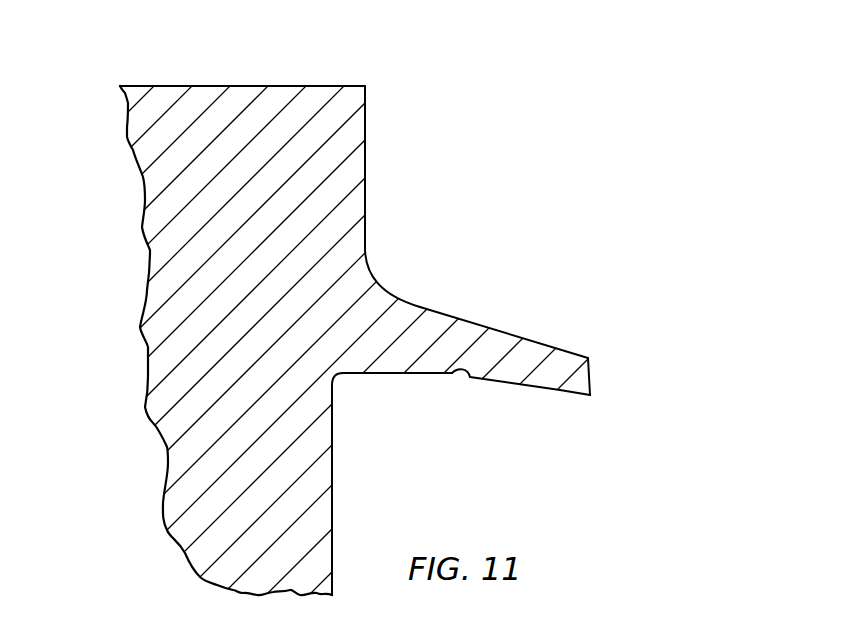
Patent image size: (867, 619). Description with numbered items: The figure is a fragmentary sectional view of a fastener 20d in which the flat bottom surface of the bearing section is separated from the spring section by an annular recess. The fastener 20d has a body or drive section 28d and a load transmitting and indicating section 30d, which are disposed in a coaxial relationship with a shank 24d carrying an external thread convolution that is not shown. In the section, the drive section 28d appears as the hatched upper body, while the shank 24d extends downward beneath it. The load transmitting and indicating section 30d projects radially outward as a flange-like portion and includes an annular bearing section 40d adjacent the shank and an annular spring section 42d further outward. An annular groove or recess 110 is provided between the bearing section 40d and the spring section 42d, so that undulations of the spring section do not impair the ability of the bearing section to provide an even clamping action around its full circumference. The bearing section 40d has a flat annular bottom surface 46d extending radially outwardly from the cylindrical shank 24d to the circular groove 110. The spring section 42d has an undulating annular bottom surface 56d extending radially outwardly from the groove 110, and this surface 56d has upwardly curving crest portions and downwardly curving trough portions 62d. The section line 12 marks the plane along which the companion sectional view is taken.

The section line 12- 12 is at (80, 475).
The fastener 20d is at (494, 182).
The shank 24d is at (314, 524).
The body or drive section 28d is at (337, 83).
The load transmitting and indicating section 30d is at (507, 304).
The annular bearing section 40d is at (429, 306).
The annular spring section 42d is at (647, 303).
The flat annular bottom surface 46d is at (394, 376).
The undulating annular bottom surface 56d is at (541, 390).
The downwardly curving trough portions 62d is at (595, 398).
The annular groove or recess 110 is at (466, 380).